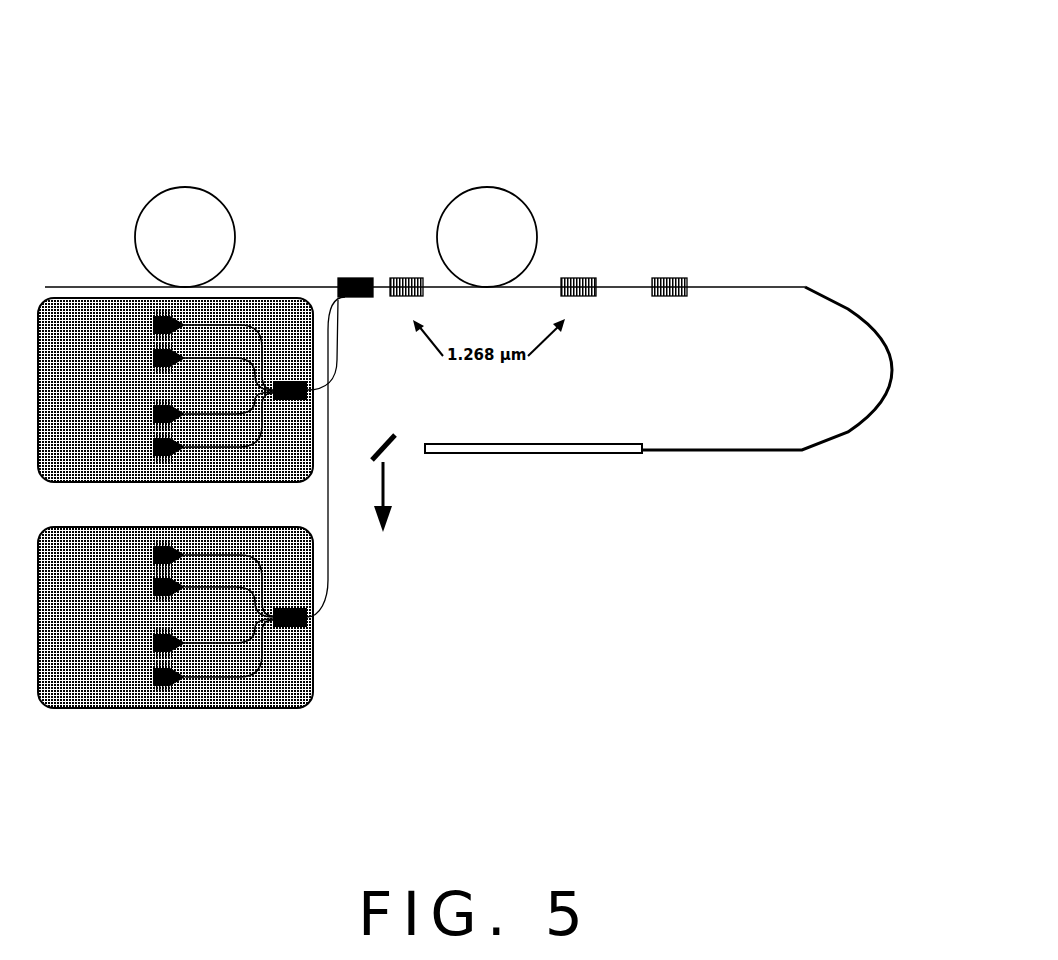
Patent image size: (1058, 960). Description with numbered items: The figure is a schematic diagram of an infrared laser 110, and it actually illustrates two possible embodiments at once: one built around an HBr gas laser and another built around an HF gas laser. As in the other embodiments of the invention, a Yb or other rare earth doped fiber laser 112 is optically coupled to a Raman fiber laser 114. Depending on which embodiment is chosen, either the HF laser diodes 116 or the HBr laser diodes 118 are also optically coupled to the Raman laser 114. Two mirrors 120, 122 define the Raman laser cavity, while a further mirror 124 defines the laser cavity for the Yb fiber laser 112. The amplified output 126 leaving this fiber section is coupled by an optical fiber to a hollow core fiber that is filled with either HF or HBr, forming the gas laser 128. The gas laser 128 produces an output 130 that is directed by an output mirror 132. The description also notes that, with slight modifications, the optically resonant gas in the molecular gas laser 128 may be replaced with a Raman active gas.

The infrared laser 110 is at (535, 45).
The Yb fiber laser 112 is at (238, 230).
The Raman fiber laser 114 is at (536, 223).
The HF laser diodes 116 is at (45, 298).
The HBr laser diodes 118 is at (47, 710).
The mirror 120 is at (401, 297).
The mirror 122 is at (588, 264).
The mirror 124 is at (667, 286).
The amplified output 126 is at (882, 307).
The gas laser 128 is at (560, 443).
The output 130 is at (386, 507).
The output mirror 132 is at (392, 437).